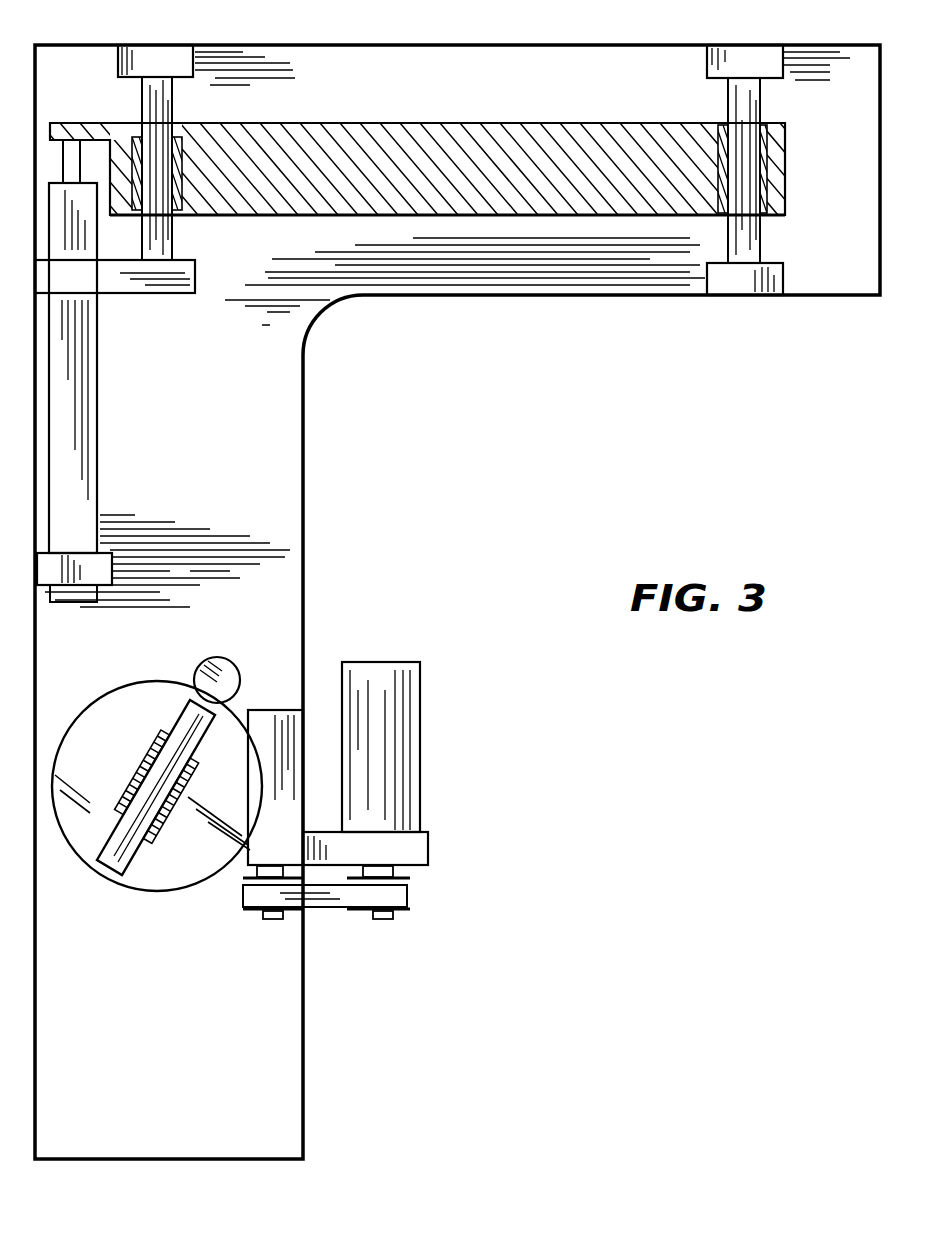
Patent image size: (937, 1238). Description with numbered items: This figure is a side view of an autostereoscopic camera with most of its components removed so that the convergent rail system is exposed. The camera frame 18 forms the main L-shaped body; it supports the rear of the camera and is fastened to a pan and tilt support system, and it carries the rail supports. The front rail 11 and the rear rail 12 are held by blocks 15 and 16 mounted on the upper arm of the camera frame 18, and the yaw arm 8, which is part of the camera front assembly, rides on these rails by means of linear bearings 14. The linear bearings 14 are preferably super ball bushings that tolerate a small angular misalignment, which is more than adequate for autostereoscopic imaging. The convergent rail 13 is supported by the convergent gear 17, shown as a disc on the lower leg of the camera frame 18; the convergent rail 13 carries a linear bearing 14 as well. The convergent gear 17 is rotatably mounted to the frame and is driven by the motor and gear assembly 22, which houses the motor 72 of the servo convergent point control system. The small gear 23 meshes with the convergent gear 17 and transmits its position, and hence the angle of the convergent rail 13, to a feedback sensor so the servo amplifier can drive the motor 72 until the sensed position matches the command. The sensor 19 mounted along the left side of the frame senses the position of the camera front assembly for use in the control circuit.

The yaw arm 8 is at (500, 122).
The front rail 11 is at (160, 242).
The rear rail 12 is at (748, 243).
The convergent rail 13 is at (137, 853).
The linear bearing 14 is at (177, 131).
The block 15 is at (133, 62).
The block 16 is at (710, 62).
The convergent gear 17 is at (92, 772).
The camera frame 18 is at (235, 425).
The sensor 19 is at (77, 497).
The motor and gear assembly 22 is at (420, 848).
The gear 23 is at (227, 673).
The motor 72 is at (400, 790).